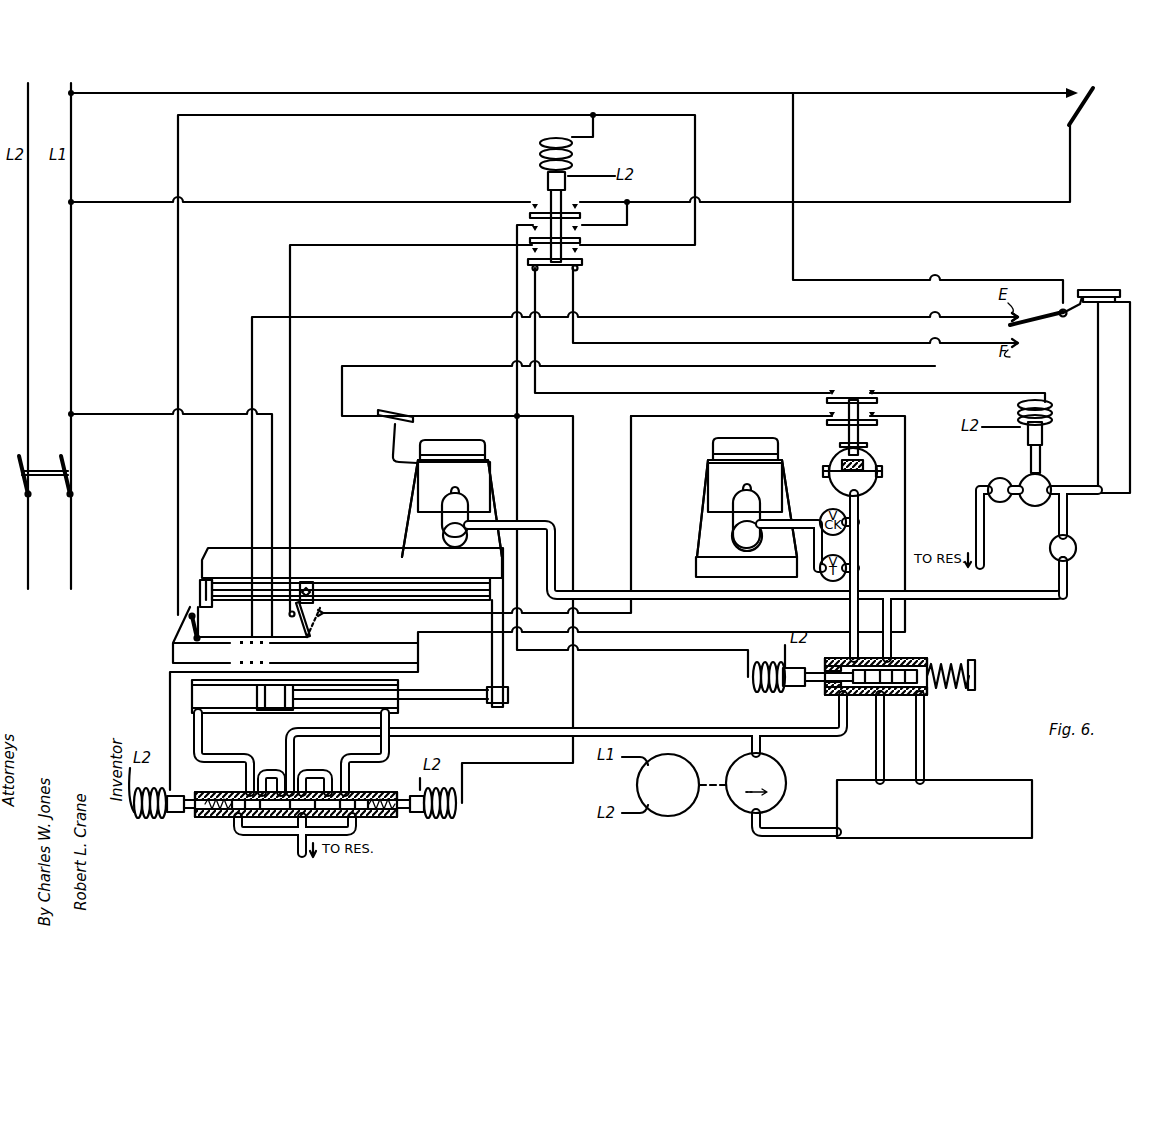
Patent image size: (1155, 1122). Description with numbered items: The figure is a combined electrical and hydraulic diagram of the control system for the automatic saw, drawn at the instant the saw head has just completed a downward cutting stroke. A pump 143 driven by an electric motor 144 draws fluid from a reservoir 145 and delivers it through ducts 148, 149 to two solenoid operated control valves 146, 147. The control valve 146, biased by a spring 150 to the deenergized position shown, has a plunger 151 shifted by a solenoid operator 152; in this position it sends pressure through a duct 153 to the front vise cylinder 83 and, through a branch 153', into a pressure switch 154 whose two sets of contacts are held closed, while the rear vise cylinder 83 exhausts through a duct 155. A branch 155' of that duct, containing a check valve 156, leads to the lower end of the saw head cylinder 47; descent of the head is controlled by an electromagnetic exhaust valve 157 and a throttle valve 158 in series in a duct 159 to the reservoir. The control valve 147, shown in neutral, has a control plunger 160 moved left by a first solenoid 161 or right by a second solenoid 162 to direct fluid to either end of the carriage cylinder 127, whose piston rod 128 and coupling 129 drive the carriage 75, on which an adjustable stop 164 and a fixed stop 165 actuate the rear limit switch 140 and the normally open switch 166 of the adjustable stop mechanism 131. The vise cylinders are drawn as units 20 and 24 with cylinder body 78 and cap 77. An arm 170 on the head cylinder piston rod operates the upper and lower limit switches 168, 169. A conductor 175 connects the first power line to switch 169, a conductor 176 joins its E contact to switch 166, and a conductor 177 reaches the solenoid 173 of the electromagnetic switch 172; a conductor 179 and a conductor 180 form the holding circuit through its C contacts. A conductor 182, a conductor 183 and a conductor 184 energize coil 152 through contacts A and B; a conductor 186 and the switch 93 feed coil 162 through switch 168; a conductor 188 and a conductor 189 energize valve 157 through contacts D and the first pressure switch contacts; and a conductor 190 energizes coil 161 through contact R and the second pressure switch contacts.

The second hydraulic cylinder unit 20 is at (700, 458).
The first hydraulic cylinder unit 24 is at (402, 497).
The saw head cylinder 47 is at (1098, 371).
The carriage 75 is at (368, 532).
The piston rod cap 77 is at (470, 446).
The cylinder body 78 is at (425, 479).
The vise cylinder 83 is at (444, 535).
The switch 93 is at (395, 410).
The carriage cylinder 127 is at (245, 705).
The piston rod 128 is at (455, 692).
The rod coupling nut 129 is at (507, 688).
The adjustable stop mechanism 131 is at (175, 625).
The rear limit switch 140 is at (320, 630).
The pump 143 is at (788, 782).
The electric motor 144 is at (663, 802).
The fluid reservoir 145 is at (950, 790).
The control valve 146 is at (945, 660).
The control valve 147 is at (372, 780).
The duct 148 is at (818, 728).
The duct 149 is at (658, 728).
The spring 150 is at (950, 690).
The plunger 151 is at (888, 700).
The solenoid operator 152 is at (766, 692).
The duct 153 is at (807, 553).
The branch duct 153' is at (876, 576).
The pressure switch 154 is at (860, 478).
The duct 155 is at (790, 591).
The branch duct 155' is at (1088, 578).
The check valve 156 is at (1077, 546).
The electromagnetic exhaust valve 157 is at (1045, 470).
The throttle valve 158 is at (988, 478).
The duct 159 is at (983, 523).
The control plunger 160 is at (310, 794).
The first solenoid 161 is at (138, 820).
The second solenoid 162 is at (418, 820).
The adjustable stop 164 is at (308, 582).
The fixed stop 165 is at (200, 590).
The switch 166 is at (203, 621).
The upper limit switch 168 is at (1060, 106).
The lower limit switch 169 is at (1050, 324).
The arm 170 is at (1102, 288).
The electromagnetic switch 172 is at (512, 222).
The solenoid 173 is at (538, 154).
The conductor 175 is at (733, 97).
The conductor 176 is at (730, 314).
The conductor 177 is at (176, 294).
The conductor 179 is at (155, 412).
The conductor 180 is at (288, 252).
The conductor 182 is at (378, 200).
The conductor 183 is at (630, 224).
The conductor 184 is at (519, 478).
The conductor 186 is at (480, 364).
The conductor 188 is at (802, 344).
The conductor 189 is at (780, 392).
The conductor 190 is at (416, 614).